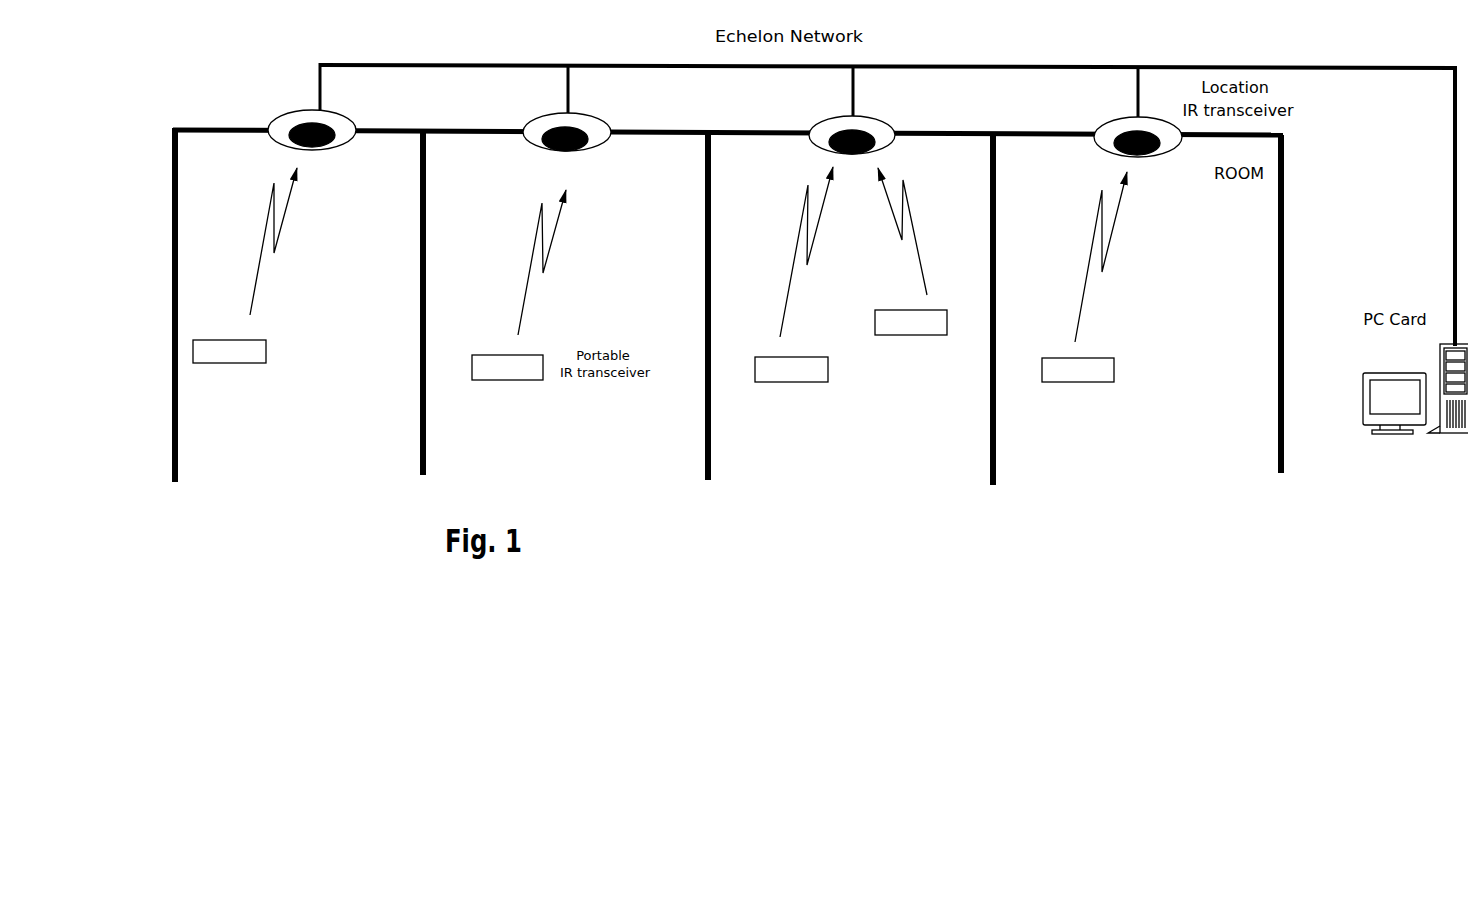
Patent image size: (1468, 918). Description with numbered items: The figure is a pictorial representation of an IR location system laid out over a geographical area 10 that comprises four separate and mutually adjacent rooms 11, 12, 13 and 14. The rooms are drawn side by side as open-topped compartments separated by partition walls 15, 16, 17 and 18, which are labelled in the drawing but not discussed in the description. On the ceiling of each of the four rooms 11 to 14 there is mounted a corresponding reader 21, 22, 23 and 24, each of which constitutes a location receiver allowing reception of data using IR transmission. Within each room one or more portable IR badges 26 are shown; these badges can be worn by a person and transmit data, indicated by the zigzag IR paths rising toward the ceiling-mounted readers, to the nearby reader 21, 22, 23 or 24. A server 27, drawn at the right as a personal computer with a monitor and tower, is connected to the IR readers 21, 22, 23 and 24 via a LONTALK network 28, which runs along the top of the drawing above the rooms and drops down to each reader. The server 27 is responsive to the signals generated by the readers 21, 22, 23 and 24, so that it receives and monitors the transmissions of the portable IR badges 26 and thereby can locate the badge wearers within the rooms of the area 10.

The geographical area 10 is at (234, 126).
The room 11 is at (262, 241).
The room 12 is at (517, 260).
The room 13 is at (842, 252).
The room 14 is at (1076, 257).
The wall 15 is at (400, 303).
The wall 16 is at (689, 306).
The wall 17 is at (977, 309).
The wall 18 is at (1264, 304).
The reader 21 is at (318, 116).
The reader 22 is at (567, 117).
The reader 23 is at (852, 119).
The reader 24 is at (1138, 122).
The portable IR badge 26 is at (653, 346).
The server 27 is at (1448, 437).
The LONTALK network 28 is at (1453, 255).